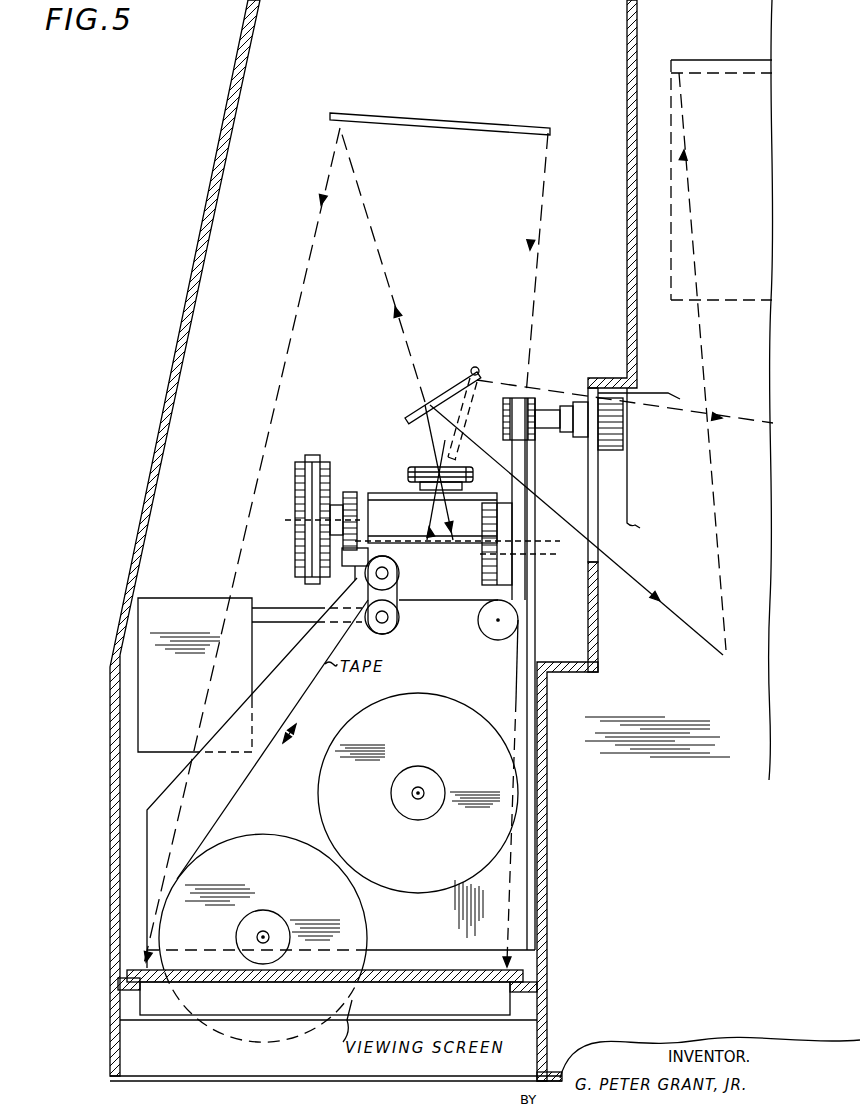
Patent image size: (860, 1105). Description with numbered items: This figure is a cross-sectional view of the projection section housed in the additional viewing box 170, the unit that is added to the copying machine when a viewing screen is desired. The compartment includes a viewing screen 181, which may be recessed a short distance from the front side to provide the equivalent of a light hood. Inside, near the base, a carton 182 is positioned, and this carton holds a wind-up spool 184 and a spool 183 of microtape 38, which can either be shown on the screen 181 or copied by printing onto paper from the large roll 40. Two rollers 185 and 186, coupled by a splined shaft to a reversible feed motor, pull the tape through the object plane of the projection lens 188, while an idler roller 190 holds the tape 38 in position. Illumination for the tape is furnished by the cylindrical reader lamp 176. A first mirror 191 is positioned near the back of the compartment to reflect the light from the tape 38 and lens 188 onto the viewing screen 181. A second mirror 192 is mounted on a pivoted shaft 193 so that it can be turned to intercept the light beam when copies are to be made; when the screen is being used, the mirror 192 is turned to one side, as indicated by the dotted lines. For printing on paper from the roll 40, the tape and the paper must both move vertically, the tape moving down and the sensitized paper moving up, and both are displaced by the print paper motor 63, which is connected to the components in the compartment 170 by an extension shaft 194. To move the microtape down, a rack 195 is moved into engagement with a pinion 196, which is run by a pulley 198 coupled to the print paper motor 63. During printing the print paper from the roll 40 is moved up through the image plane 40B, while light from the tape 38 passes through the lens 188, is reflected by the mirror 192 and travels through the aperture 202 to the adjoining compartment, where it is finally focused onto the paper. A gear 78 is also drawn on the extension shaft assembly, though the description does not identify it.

The viewing box 170 is at (204, 243).
The first mirror 191 is at (486, 104).
The image plane 40B is at (740, 40).
The roll 40 is at (735, 293).
The pivoted shaft 193 is at (477, 370).
The second mirror 192 is at (408, 410).
The projection lens 188 is at (420, 467).
The reader lamp 176 is at (391, 478).
The pinion 196 is at (350, 492).
The pulley 198 is at (295, 534).
The rack 195 is at (347, 562).
The roller 185 is at (400, 573).
The roller 186 is at (398, 623).
The idler roller 190 is at (493, 632).
The extension shaft 194 is at (562, 415).
The gear 78 is at (600, 452).
The aperture 202 is at (590, 558).
The print paper motor 63 is at (636, 472).
The carton 182 is at (523, 915).
The microtape 38 is at (305, 690).
The wind-up spool 184 is at (433, 748).
The spool 183 is at (275, 873).
The viewing screen 181 is at (243, 982).